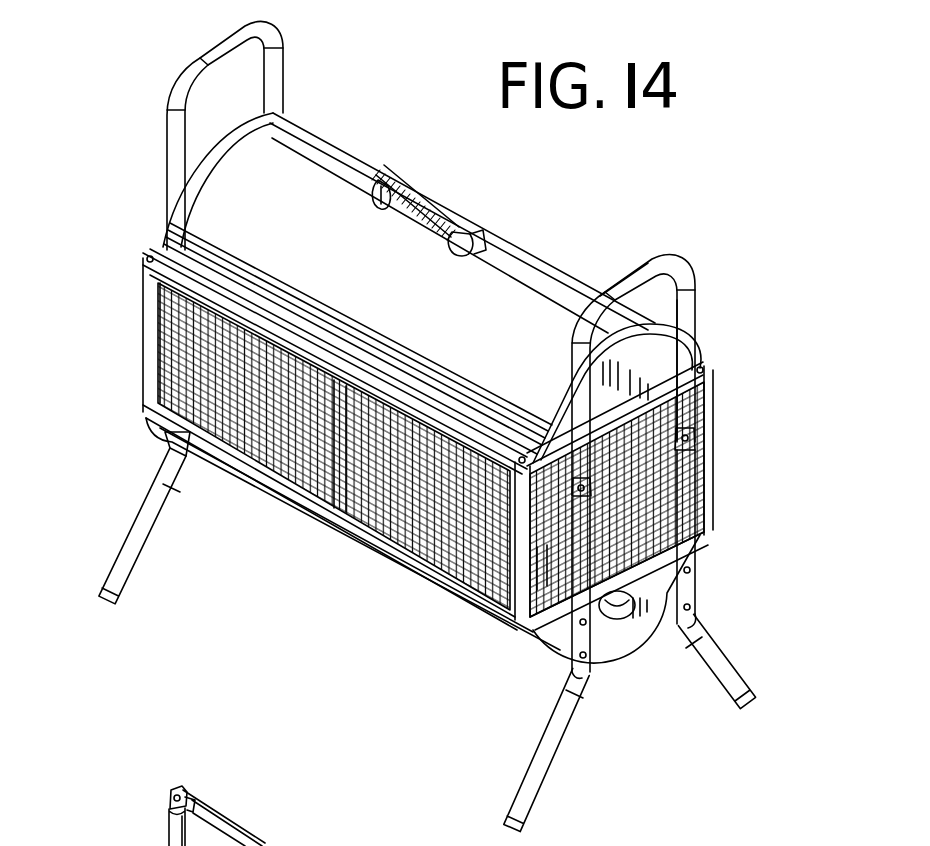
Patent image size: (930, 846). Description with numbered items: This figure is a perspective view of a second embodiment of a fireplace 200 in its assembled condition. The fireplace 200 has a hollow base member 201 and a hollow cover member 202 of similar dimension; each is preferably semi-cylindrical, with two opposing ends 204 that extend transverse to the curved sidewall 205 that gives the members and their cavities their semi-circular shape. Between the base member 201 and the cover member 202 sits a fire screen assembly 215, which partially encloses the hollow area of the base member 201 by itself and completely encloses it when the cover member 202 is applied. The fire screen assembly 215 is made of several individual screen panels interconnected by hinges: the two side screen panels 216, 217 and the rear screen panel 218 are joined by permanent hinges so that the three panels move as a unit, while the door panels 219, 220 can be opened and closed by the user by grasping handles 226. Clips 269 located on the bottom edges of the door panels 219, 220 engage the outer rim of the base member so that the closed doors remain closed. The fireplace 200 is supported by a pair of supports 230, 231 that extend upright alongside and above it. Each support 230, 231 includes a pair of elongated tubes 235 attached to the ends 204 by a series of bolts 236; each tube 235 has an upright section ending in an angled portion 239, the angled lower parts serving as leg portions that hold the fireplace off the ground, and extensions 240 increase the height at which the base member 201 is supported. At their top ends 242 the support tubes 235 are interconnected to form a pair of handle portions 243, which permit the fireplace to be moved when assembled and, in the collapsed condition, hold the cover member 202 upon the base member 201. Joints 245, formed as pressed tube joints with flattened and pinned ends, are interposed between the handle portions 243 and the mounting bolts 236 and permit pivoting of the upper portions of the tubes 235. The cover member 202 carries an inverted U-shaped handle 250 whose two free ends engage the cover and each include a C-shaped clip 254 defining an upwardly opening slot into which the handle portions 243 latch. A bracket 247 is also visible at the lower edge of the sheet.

The fireplace 200 is at (758, 328).
The base member 201 is at (620, 653).
The cover member 202 is at (533, 273).
The ends 204 is at (160, 235).
The curved sidewall 205 is at (320, 152).
The fire screen assembly 215 is at (703, 478).
The side screen panel 216 is at (700, 522).
The side screen panel 217 is at (150, 352).
The rear screen panel 218 is at (707, 417).
The door panel 219 is at (410, 547).
The door panel 220 is at (155, 403).
The handle 226 is at (298, 503).
The support 230 is at (700, 310).
The support 231 is at (288, 78).
The elongated tube 235 is at (696, 553).
The bolt 236 is at (560, 652).
The angled portion 239 is at (699, 627).
The extension 240 is at (740, 667).
The top end 242 is at (672, 262).
The handle portion 243 is at (627, 273).
The joint 245 is at (588, 488).
The bracket 247 is at (290, 816).
The handle 250 is at (430, 190).
The clip 254 is at (370, 190).
The clip 269 is at (335, 520).